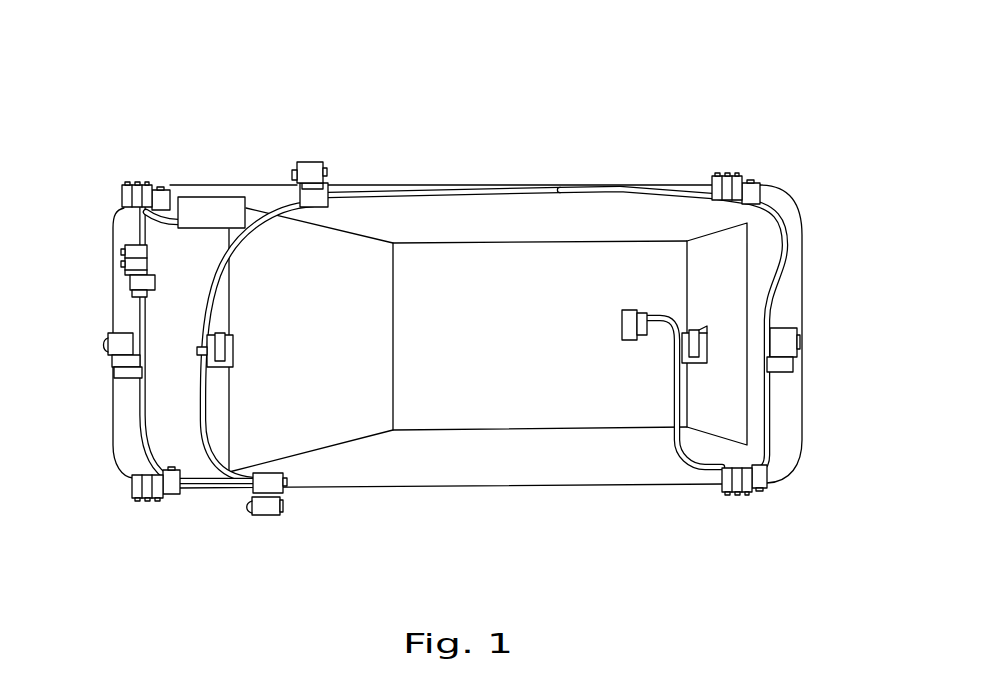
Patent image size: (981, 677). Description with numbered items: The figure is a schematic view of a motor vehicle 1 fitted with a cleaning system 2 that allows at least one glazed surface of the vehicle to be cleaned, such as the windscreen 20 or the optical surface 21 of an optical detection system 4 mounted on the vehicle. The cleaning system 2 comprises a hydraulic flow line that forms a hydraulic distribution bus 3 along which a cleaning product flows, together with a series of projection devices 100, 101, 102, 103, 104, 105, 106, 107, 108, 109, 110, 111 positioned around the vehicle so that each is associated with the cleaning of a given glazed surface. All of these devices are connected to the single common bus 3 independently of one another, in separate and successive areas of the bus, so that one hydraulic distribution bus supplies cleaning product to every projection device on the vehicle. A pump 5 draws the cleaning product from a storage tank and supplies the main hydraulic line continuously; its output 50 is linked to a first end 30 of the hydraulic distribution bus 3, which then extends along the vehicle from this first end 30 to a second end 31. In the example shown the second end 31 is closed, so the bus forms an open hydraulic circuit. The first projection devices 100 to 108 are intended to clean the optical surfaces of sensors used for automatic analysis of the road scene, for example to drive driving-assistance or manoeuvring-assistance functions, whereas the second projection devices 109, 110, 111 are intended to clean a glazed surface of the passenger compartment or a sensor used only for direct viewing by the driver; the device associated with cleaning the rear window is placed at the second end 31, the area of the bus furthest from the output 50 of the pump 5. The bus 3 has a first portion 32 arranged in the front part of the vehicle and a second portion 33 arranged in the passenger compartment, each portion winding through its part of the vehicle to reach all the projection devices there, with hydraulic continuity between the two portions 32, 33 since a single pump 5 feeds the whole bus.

The motor vehicle 1 is at (128, 73).
The cleaning system 2 is at (208, 82).
The hydraulic distribution bus 3 is at (470, 192).
The optical detection system 4 is at (310, 163).
The pump 5 is at (187, 196).
The windscreen 20 is at (364, 397).
The optical surface 21 is at (292, 176).
The first end 30 is at (105, 223).
The output 50 is at (126, 206).
The second end 31 is at (662, 320).
The first portion 32 is at (132, 424).
The second portion 33 is at (560, 184).
The first projection device 100 is at (112, 188).
The first projection device 101 is at (106, 255).
The first projection device 102 is at (100, 354).
The first projection device 103 is at (142, 510).
The first projection device 104 is at (263, 525).
The first projection device 105 is at (283, 178).
The first projection device 106 is at (720, 170).
The first projection device 107 is at (823, 333).
The first projection device 108 is at (752, 500).
The second projection device 109 is at (243, 350).
The second projection device 110 is at (608, 320).
The second projection device 111 is at (681, 316).